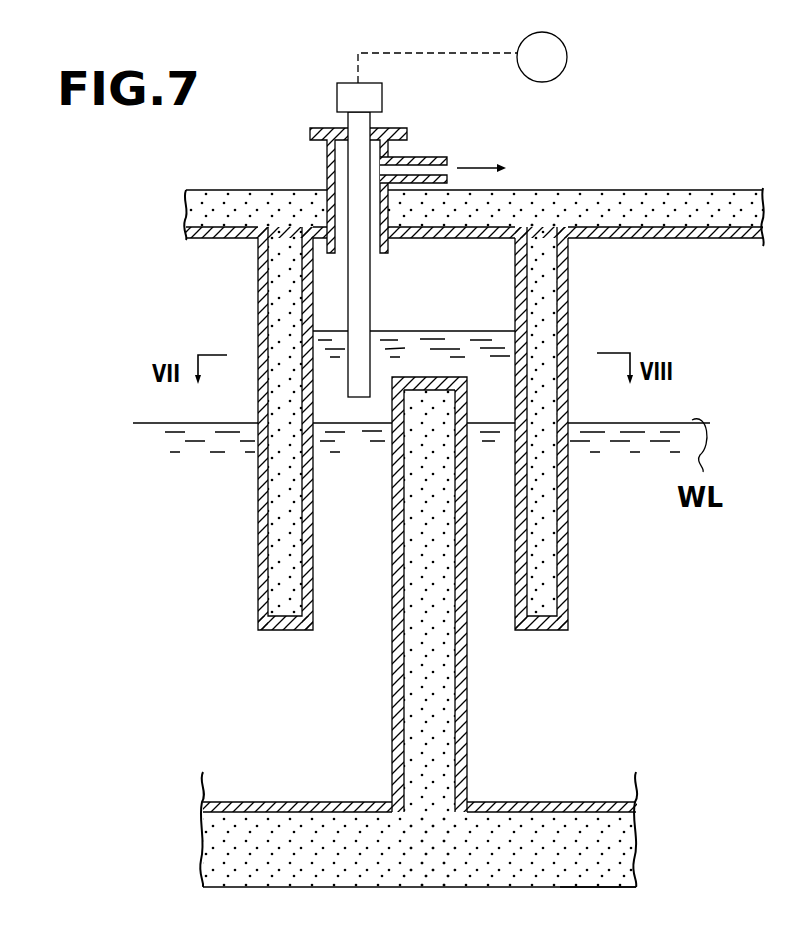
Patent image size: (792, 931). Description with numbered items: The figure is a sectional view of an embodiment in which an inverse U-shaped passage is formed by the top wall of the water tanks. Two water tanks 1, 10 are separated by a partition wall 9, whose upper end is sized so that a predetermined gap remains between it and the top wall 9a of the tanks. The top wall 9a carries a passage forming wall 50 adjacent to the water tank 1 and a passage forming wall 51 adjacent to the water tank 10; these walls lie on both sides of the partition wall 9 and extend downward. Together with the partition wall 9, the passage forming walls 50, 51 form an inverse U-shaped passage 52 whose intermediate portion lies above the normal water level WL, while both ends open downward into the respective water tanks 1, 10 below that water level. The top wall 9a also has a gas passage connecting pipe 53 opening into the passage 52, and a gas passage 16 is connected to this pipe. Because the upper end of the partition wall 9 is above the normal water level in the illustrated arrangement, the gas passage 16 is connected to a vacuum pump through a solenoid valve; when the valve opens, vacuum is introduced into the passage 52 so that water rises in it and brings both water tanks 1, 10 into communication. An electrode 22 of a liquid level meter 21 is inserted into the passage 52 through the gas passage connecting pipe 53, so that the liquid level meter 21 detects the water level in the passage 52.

The water tank 1 is at (232, 774).
The partition wall 9 is at (443, 699).
The top wall 9a is at (668, 205).
The water tank 10 is at (583, 777).
The gas passage 16 is at (430, 157).
The liquid level meter 21 is at (347, 93).
The electrode 22 is at (355, 293).
The passage forming wall 50 is at (283, 427).
The passage forming wall 51 is at (545, 550).
The inverse U-shaped passage 52 is at (497, 300).
The gas passage connecting pipe 53 is at (327, 156).